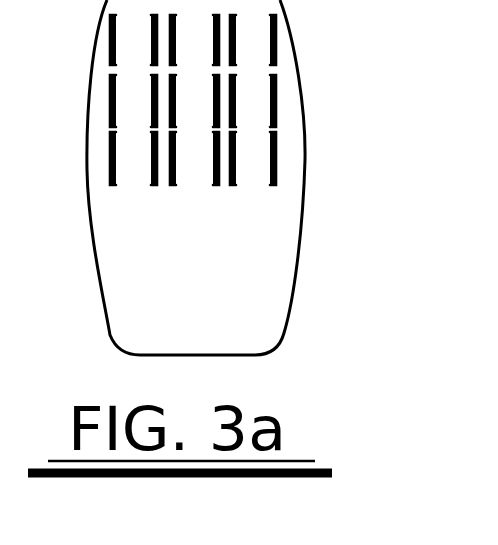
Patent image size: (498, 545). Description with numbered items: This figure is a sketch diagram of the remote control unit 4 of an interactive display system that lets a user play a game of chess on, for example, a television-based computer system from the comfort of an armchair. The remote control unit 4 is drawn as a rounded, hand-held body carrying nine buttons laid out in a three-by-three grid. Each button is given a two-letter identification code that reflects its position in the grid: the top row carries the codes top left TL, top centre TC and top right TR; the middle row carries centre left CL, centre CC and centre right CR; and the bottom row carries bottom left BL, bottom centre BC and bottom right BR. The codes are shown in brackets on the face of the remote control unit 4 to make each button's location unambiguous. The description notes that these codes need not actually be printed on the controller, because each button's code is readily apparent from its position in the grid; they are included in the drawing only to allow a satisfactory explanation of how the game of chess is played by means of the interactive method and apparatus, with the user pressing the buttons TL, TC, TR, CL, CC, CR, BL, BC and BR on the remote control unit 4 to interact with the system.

The remote control unit 4 is at (241, 177).
The top left button code TL is at (133, 40).
The top centre button code TC is at (194, 40).
The top right button code TR is at (253, 40).
The centre left button code CL is at (133, 101).
The centre centre button code CC is at (194, 101).
The centre right button code CR is at (253, 101).
The bottom left button code BL is at (133, 158).
The bottom centre button code BC is at (194, 158).
The bottom right button code BR is at (253, 158).